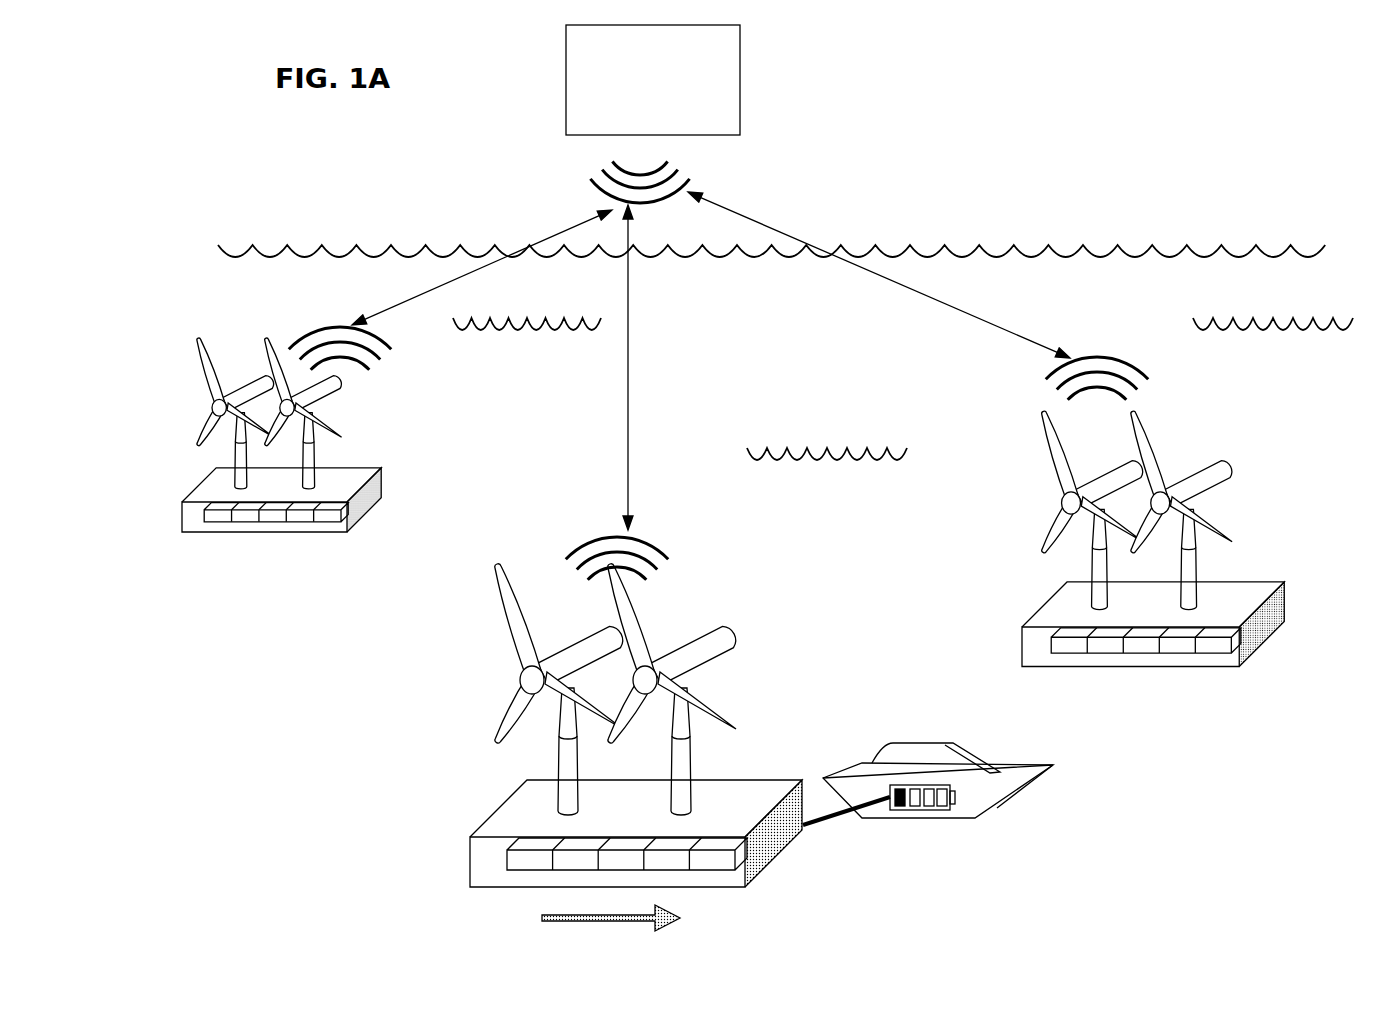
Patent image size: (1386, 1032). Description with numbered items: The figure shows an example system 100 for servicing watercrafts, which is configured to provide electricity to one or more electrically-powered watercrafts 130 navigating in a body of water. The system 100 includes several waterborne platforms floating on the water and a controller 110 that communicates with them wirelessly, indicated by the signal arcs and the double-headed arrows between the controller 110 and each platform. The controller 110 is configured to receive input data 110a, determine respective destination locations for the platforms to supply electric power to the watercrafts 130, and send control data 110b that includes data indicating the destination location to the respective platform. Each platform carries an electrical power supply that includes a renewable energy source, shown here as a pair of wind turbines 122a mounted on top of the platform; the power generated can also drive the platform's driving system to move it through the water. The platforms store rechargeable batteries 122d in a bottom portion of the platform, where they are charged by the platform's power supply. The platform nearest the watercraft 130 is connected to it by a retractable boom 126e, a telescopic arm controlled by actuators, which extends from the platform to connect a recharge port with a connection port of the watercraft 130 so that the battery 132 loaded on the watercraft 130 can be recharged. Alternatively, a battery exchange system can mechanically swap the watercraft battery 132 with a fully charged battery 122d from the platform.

The system for servicing watercrafts 100 is at (1193, 89).
The controller 110 is at (740, 55).
The input data 110a is at (814, 214).
The control data 110b is at (544, 500).
The wind turbine 122a is at (1167, 457).
The batteries 122d is at (1145, 648).
The retractable boom 126e is at (838, 812).
The electrically-powered watercraft 130 is at (958, 742).
The battery 132 is at (948, 807).